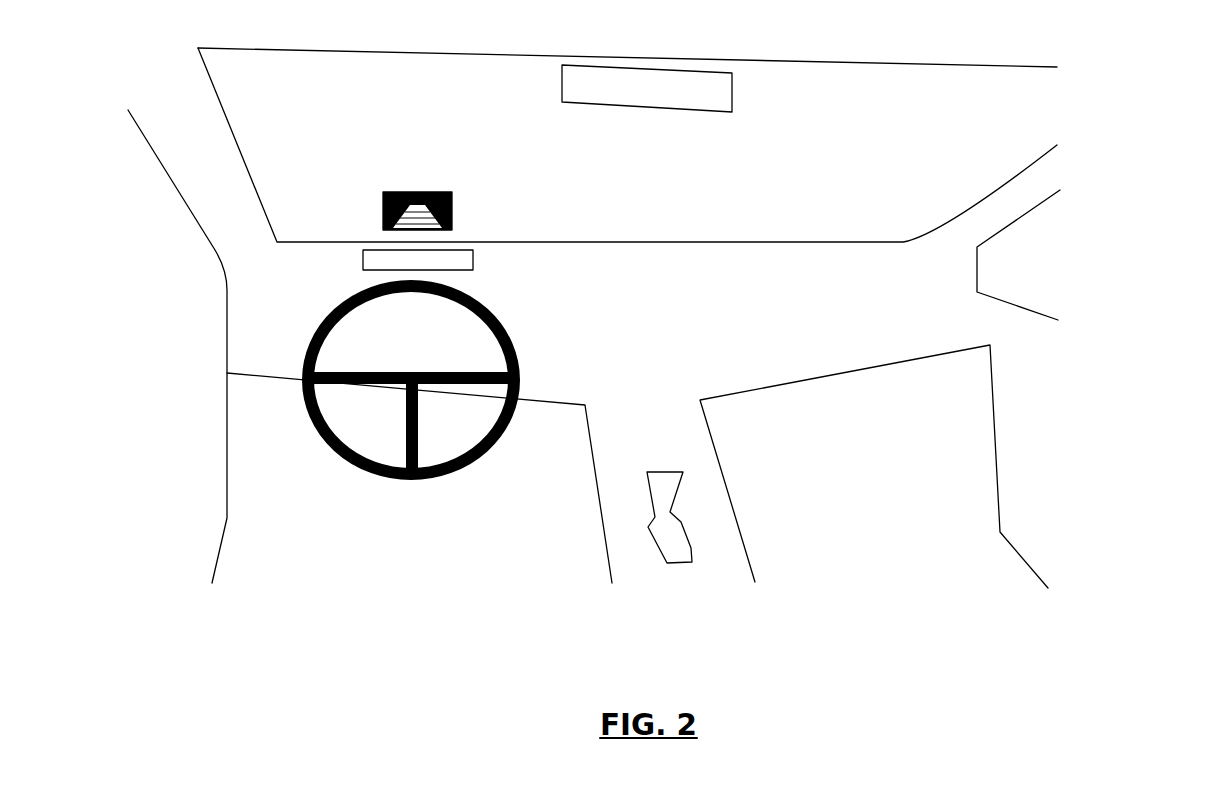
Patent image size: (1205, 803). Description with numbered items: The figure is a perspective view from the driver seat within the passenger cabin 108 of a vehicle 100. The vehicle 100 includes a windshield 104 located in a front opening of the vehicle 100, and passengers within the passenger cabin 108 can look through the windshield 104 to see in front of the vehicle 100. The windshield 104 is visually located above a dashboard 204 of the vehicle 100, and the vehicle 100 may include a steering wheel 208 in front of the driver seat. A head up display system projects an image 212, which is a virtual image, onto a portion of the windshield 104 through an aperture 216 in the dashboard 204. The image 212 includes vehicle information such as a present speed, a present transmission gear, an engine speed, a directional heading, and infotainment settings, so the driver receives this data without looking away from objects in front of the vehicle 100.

The vehicle 100 is at (158, 100).
The windshield 104 is at (337, 170).
The passenger cabin 108 is at (1038, 183).
The dashboard 204 is at (298, 288).
The steering wheel 208 is at (495, 310).
The image 212 is at (360, 211).
The aperture 216 is at (362, 255).